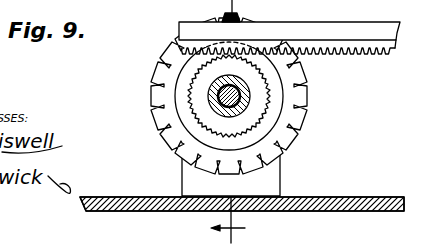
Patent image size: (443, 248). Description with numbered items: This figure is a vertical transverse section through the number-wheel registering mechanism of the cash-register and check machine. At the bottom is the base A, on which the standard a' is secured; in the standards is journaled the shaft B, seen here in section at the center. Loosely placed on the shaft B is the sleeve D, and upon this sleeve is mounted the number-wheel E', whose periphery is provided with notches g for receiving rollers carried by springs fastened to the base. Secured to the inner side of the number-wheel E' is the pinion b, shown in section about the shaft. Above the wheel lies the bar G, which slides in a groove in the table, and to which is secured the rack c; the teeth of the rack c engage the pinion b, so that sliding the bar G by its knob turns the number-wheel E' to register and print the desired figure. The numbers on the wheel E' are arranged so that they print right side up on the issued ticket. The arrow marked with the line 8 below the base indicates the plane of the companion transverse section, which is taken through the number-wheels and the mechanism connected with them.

The bar G is at (289, 27).
The rack c is at (288, 47).
The notches g is at (328, 77).
The number-wheel E' is at (242, 96).
The sleeve D is at (223, 84).
The pinion b is at (226, 99).
The shaft B is at (231, 112).
The standard a' is at (231, 173).
The base A is at (235, 193).
The section line 8 is at (228, 222).